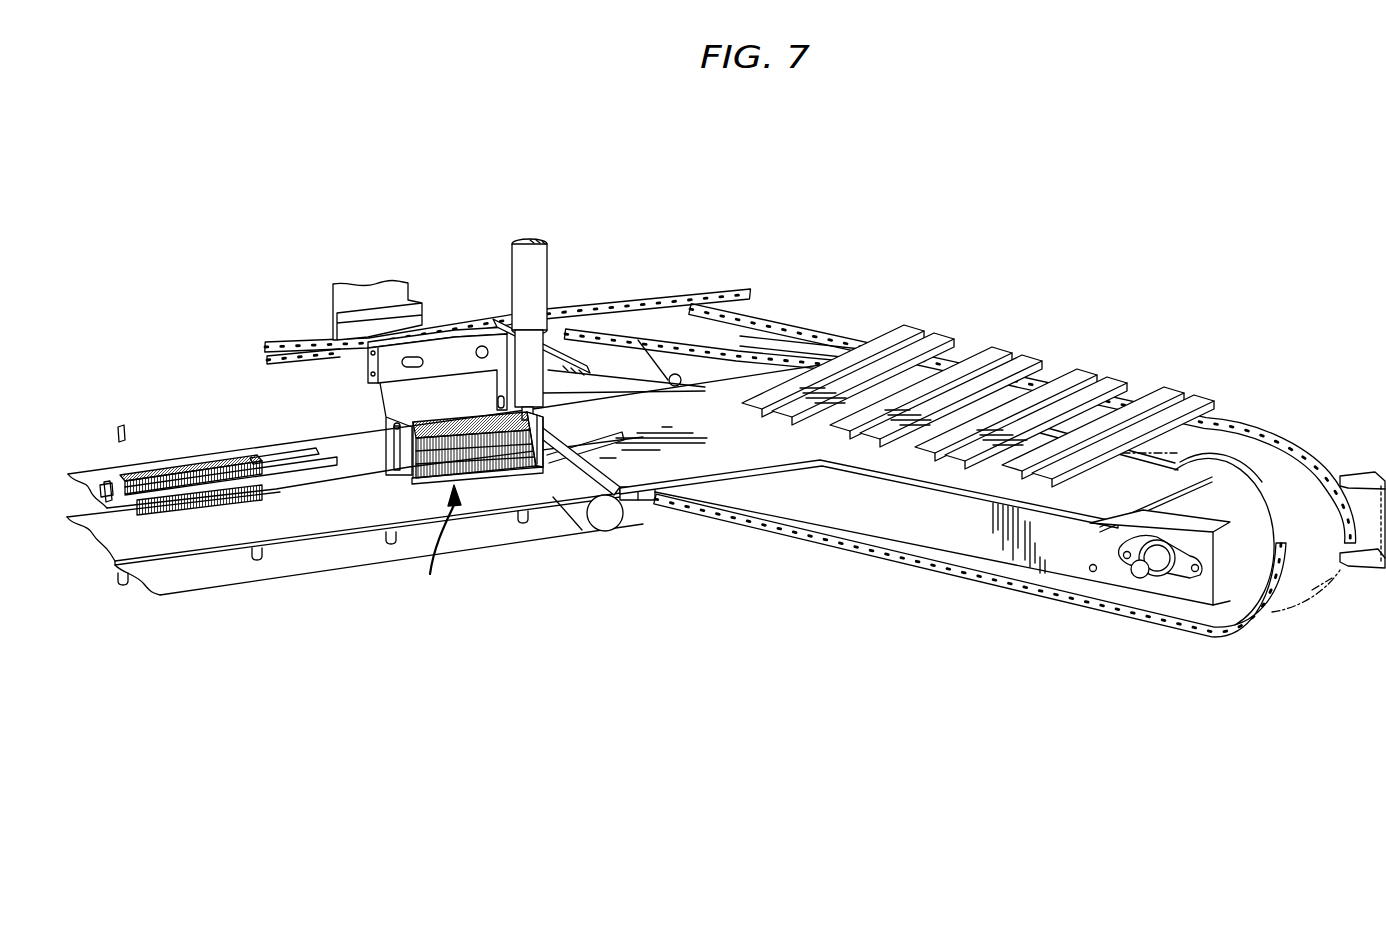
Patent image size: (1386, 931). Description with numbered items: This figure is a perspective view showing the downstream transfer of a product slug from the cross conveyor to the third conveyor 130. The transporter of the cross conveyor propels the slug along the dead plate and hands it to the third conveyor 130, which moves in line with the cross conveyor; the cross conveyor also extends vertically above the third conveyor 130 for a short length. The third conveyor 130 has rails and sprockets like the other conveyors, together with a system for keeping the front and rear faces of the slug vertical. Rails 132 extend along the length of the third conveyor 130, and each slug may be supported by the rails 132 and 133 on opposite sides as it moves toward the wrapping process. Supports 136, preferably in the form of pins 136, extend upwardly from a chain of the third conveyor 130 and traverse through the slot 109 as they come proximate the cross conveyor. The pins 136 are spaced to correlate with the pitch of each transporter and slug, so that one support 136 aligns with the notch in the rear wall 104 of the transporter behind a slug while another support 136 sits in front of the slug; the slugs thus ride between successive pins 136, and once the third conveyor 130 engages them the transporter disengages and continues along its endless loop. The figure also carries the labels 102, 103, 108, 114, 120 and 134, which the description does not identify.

The transfer block 102 is at (477, 486).
The base plate 103 is at (486, 480).
The rear wall 104 is at (558, 437).
The support post 108 is at (519, 283).
The slot 109 is at (585, 446).
The mounting bracket 114 is at (453, 333).
The hanger 120 is at (373, 413).
The third conveyor 130 is at (435, 541).
The rails 132 is at (266, 453).
The rails 133 is at (308, 478).
The pad 134 is at (465, 428).
The supports 136 is at (108, 482).